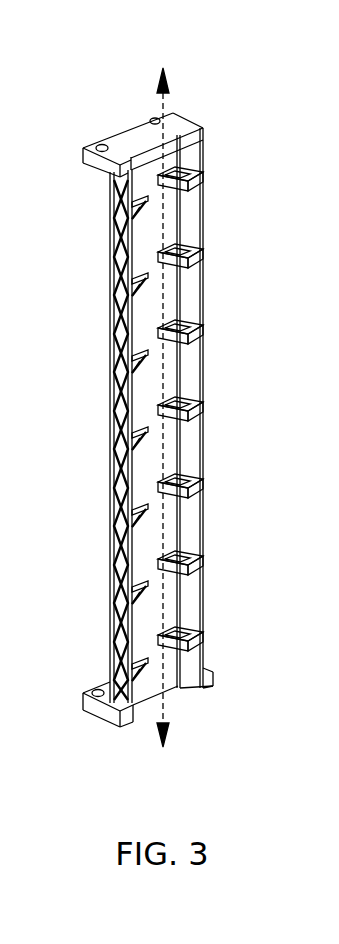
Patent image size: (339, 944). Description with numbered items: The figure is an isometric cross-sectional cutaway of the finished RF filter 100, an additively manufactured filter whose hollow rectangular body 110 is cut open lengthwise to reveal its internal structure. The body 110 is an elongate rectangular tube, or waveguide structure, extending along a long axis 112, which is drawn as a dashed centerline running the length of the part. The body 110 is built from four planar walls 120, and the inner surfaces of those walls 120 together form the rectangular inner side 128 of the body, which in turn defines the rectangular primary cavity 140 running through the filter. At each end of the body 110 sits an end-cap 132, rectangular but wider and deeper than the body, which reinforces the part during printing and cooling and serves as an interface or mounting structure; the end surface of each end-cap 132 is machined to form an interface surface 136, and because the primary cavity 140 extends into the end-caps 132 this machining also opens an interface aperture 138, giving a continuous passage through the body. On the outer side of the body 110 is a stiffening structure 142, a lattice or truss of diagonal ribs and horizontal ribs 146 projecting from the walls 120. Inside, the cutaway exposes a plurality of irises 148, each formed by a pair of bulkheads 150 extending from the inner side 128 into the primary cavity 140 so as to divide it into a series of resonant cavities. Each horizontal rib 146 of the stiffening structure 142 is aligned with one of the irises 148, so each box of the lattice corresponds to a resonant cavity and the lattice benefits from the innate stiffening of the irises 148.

The RF filter 100 is at (252, 121).
The hollow rectangular body 110 is at (117, 322).
The long axis 112 is at (166, 102).
The planar walls 120 is at (200, 210).
The inner side 128 is at (200, 280).
The end-cap 132 is at (205, 136).
The interface surface 136 is at (138, 113).
The interface aperture 138 is at (142, 147).
The primary cavity 140 is at (122, 211).
The stiffening structure 142 is at (113, 538).
The horizontal ribs 146 is at (203, 490).
The irises 148 is at (202, 498).
The bulkheads 150 is at (115, 413).